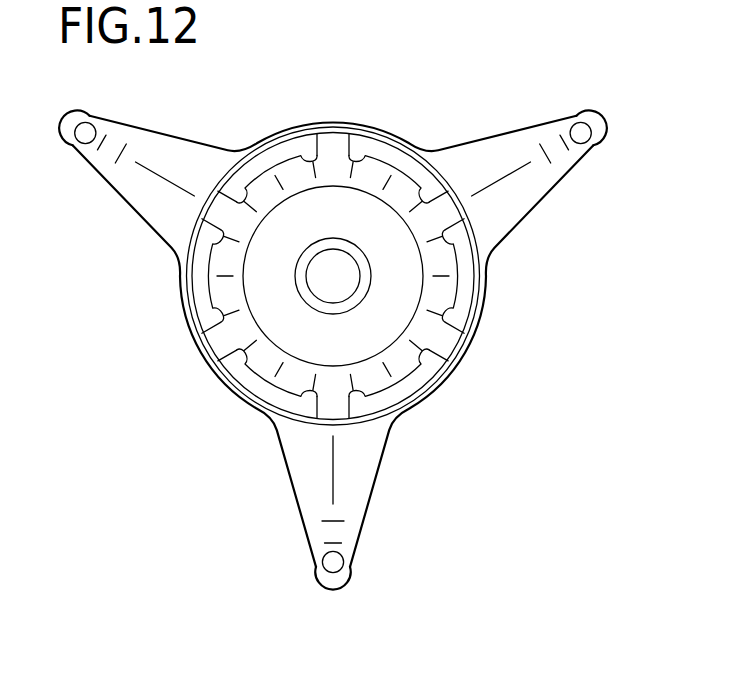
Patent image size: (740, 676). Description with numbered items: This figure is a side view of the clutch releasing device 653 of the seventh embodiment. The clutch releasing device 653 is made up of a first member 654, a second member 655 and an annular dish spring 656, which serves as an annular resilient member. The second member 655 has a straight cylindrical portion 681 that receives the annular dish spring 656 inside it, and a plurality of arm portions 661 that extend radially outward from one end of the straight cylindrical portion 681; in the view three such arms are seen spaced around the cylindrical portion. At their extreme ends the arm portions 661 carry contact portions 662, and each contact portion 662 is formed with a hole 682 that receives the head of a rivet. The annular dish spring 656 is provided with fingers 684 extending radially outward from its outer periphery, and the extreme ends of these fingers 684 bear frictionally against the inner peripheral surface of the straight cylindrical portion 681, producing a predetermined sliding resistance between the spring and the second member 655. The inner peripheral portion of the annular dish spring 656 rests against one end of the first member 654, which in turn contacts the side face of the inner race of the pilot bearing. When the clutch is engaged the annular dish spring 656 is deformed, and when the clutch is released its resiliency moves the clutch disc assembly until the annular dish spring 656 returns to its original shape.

The clutch releasing device 653 is at (433, 402).
The first member 654 is at (276, 344).
The second member 655 is at (306, 120).
The annular dish spring 656 is at (448, 296).
The arm portions 661 is at (186, 152).
The contact portions 662 is at (92, 121).
The straight cylindrical portion 681 is at (418, 150).
The holes 682 is at (88, 144).
The fingers 684 is at (333, 143).